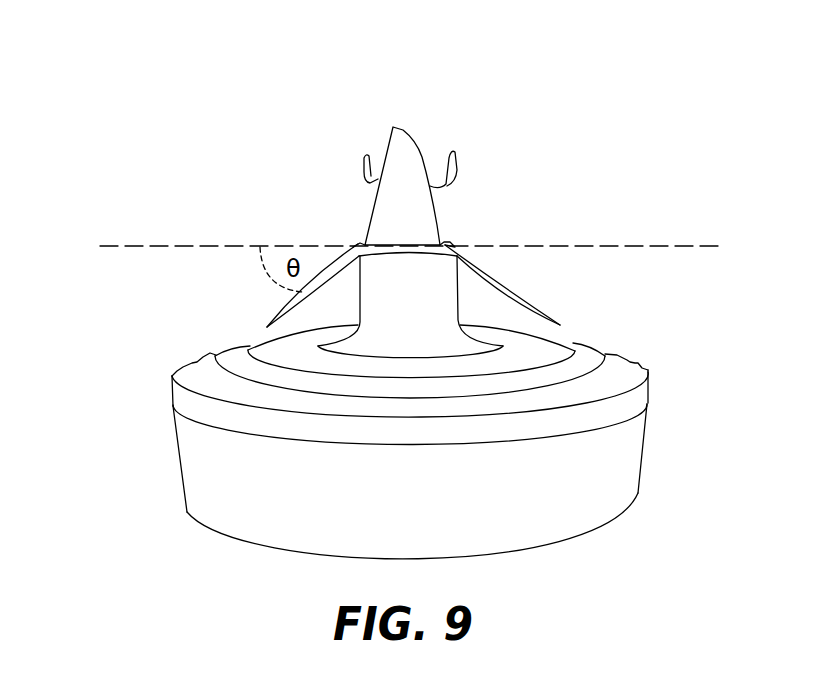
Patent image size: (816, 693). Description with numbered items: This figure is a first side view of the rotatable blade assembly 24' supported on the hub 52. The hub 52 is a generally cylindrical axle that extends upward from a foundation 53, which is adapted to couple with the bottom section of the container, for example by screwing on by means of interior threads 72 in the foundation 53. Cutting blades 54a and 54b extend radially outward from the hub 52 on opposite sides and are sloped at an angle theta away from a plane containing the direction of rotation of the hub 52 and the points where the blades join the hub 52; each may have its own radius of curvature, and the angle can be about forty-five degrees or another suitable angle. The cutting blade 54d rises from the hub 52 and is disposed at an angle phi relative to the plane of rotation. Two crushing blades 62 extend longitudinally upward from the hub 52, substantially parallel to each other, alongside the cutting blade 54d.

The rotatable blade assembly 24' is at (480, 96).
The hub 52 is at (423, 320).
The foundation 53 is at (598, 503).
The cutting blade 54a is at (341, 257).
The cutting blade 54b is at (486, 272).
The cutting blade 54d is at (405, 132).
The crushing blade 62 is at (372, 157).
The interior threads 72 is at (393, 418).